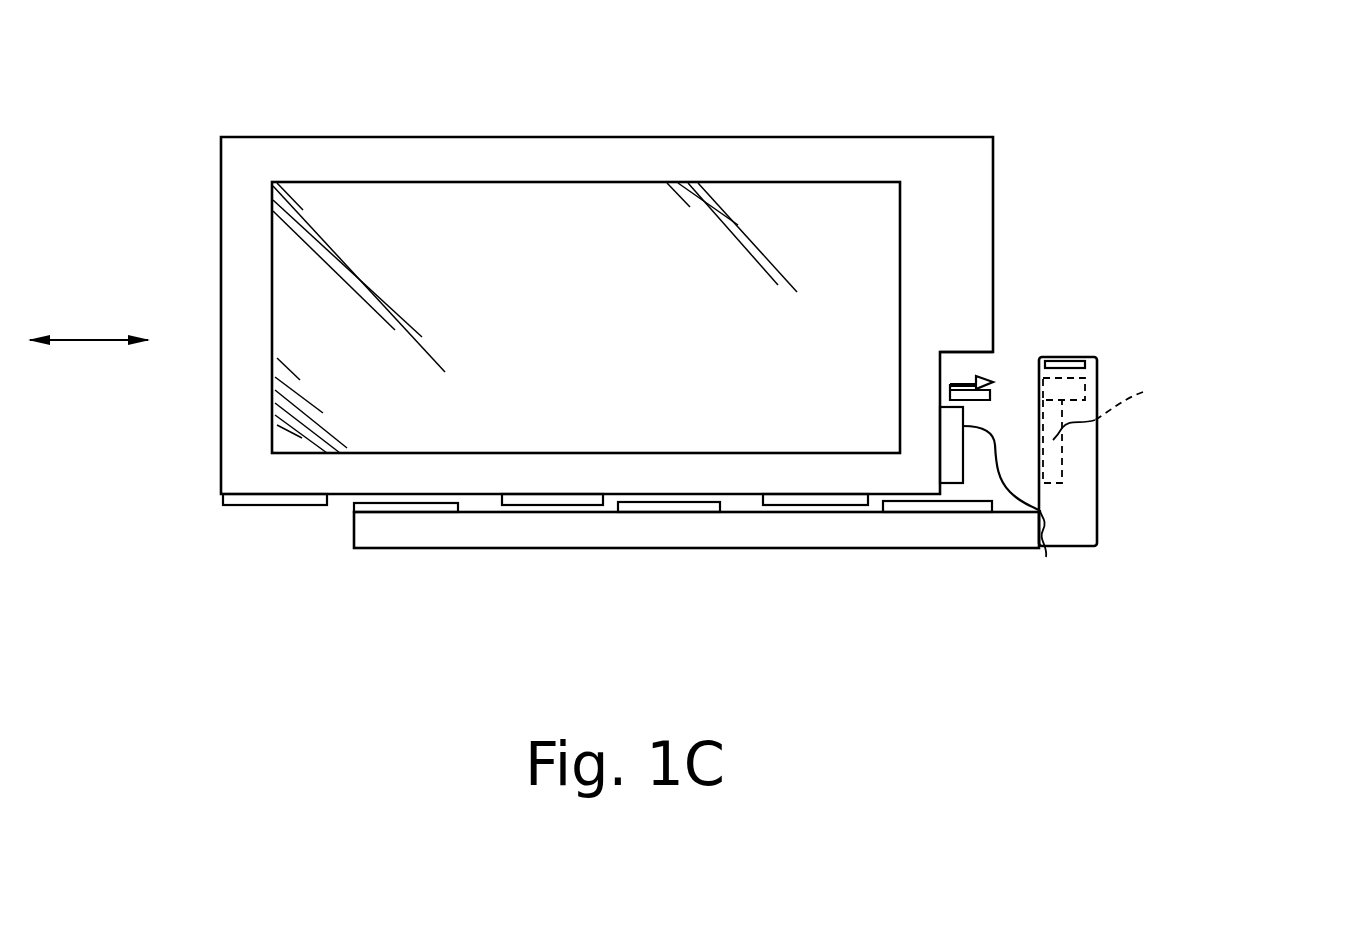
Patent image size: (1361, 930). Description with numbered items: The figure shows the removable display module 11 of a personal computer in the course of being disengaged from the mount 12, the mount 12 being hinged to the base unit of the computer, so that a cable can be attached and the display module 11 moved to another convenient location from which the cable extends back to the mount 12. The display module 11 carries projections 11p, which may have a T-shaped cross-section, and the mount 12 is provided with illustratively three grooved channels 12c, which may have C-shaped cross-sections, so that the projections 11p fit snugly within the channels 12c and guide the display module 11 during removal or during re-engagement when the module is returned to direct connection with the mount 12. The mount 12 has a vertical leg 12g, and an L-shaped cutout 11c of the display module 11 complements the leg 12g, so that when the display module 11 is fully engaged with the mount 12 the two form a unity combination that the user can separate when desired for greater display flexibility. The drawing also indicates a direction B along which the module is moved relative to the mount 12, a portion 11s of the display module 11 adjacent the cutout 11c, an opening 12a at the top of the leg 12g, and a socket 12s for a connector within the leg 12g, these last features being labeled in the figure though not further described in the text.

The display module 11 is at (692, 108).
The projections 11p is at (262, 507).
The panel side connecting portion 11s is at (953, 348).
The L-shaped cutout 11c is at (1008, 350).
The mount 12 is at (727, 528).
The grooved channels 12c is at (402, 507).
The connector opening 12a is at (1060, 361).
The socket for connector 12s is at (1072, 394).
The vertical leg 12g is at (1097, 470).
The direction B is at (90, 340).